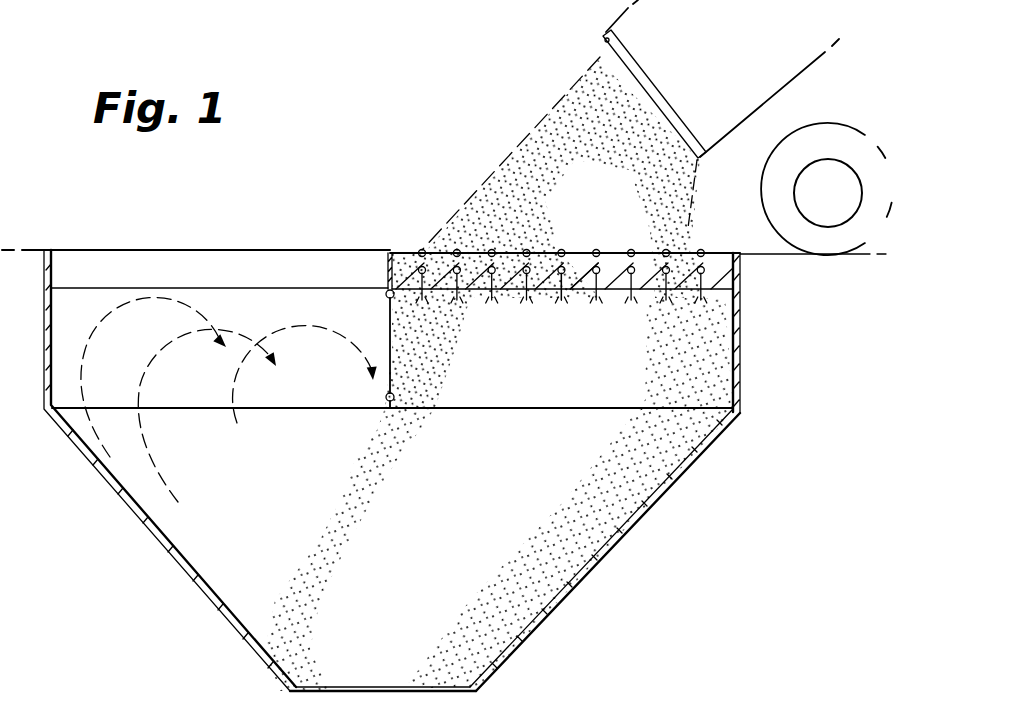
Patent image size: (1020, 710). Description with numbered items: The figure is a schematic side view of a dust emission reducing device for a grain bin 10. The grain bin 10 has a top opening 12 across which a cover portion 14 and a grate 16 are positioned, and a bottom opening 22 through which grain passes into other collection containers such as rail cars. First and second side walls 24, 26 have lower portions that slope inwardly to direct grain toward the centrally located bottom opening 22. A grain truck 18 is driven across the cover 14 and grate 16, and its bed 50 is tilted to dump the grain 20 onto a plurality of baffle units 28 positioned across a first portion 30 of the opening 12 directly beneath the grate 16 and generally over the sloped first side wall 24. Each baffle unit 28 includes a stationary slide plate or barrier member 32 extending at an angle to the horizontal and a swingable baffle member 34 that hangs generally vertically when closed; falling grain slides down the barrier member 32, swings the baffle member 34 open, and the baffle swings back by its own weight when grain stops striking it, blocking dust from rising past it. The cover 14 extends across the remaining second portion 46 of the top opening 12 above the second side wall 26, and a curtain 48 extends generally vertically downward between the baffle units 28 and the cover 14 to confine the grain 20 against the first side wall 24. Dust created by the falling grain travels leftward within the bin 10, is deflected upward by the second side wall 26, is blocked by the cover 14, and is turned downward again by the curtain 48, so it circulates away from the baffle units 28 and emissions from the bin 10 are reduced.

The grain bin 10 is at (738, 368).
The top opening 12 is at (404, 244).
The cover portion 14 is at (135, 249).
The grate 16 is at (449, 214).
The grain truck 18 is at (606, 14).
The grain 20 is at (560, 142).
The bottom opening 22 is at (458, 692).
The first side wall 24 is at (661, 497).
The second side wall 26 is at (192, 573).
The baffle units 28 is at (614, 314).
The first portion 30 is at (466, 160).
The barrier member 32 is at (577, 293).
The baffle member 34 is at (545, 292).
The second portion 46 is at (253, 218).
The curtain 48 is at (385, 397).
The bed 50 is at (603, 34).